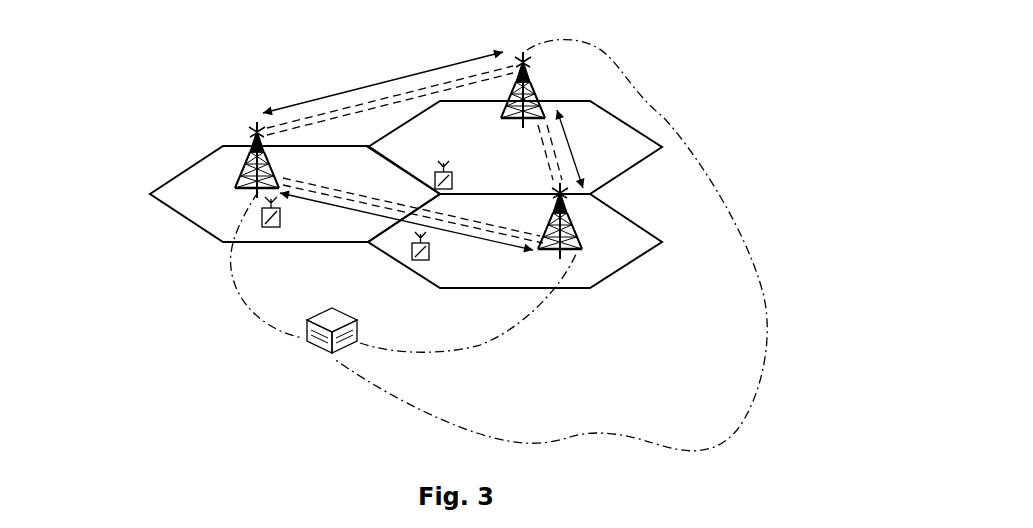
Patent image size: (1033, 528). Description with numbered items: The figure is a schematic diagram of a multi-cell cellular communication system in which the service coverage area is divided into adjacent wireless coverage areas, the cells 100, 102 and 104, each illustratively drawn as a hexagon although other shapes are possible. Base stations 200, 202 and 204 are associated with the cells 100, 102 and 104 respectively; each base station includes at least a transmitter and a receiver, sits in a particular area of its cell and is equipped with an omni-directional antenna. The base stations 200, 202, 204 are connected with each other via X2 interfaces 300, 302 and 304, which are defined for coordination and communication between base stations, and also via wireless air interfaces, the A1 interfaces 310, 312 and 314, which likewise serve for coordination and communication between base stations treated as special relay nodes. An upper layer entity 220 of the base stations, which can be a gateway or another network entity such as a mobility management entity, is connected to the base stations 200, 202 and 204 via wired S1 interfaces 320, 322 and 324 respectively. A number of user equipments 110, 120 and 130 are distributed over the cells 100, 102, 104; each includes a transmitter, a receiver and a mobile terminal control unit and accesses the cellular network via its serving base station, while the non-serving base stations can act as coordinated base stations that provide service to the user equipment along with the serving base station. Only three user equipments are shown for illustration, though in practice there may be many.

The cell 100 is at (183, 170).
The cell 102 is at (668, 116).
The cell 104 is at (603, 281).
The user equipment 110 is at (272, 228).
The user equipment 120 is at (443, 171).
The user equipment 130 is at (419, 262).
The base station 200 is at (253, 122).
The base station 202 is at (525, 50).
The base station 204 is at (573, 226).
The upper layer entity 220 is at (306, 341).
The X2 interface 300 is at (418, 92).
The X2 interface 302 is at (457, 226).
The X2 interface 304 is at (559, 113).
The A1 interface 310 is at (413, 73).
The A1 interface 312 is at (490, 240).
The A1 interface 314 is at (558, 140).
The S1 interface 320 is at (242, 303).
The S1 interface 322 is at (763, 294).
The S1 interface 324 is at (500, 344).